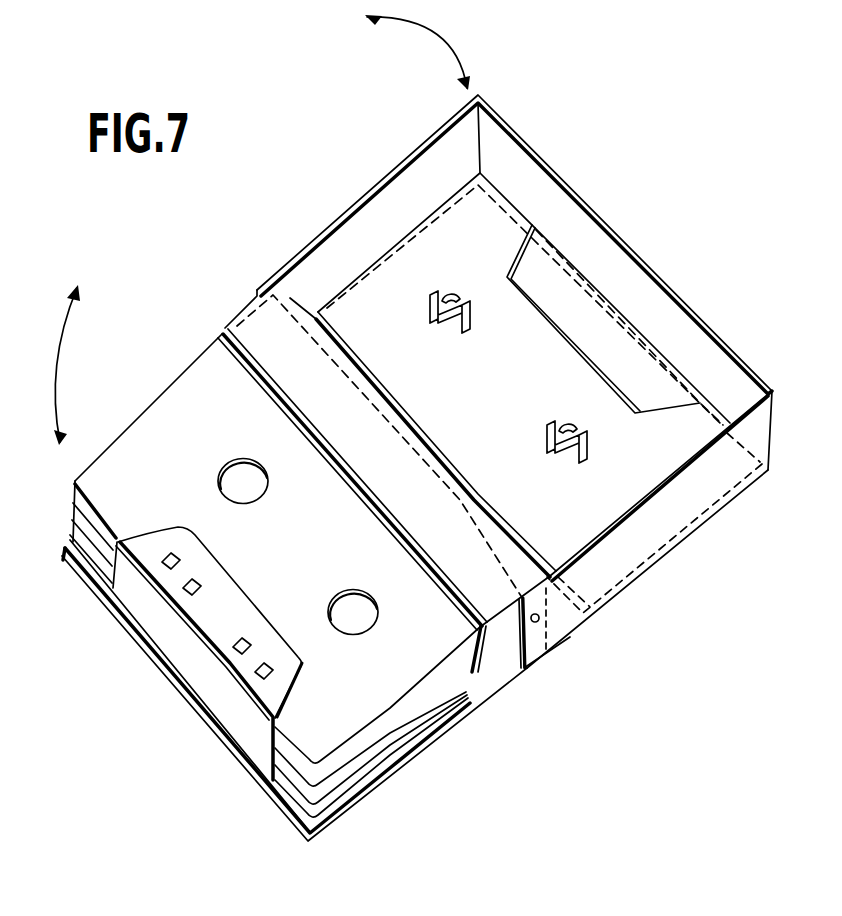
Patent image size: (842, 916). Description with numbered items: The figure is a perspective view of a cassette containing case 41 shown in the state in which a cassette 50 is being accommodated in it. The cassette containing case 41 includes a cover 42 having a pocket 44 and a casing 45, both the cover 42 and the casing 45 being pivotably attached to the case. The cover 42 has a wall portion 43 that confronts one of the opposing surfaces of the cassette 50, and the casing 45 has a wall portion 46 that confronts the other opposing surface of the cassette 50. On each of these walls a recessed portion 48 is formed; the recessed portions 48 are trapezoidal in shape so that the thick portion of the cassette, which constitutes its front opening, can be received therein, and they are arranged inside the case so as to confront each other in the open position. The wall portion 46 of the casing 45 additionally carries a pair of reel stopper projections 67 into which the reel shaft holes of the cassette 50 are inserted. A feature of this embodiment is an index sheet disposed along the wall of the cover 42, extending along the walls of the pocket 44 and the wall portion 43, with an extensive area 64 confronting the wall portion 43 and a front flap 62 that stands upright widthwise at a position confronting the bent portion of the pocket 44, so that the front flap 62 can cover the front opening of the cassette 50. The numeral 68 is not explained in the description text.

The cassette containing case 41 is at (767, 323).
The cover 42 is at (488, 698).
The wall portion 43 is at (307, 833).
The pocket 44 is at (253, 328).
The casing 45 is at (660, 558).
The wall portion 46 is at (487, 212).
The recessed portion 48 is at (585, 312).
The cassette 50 is at (175, 427).
The front flap 62 is at (197, 670).
The extensive area 64 is at (403, 738).
The reel stopper projections 67 is at (467, 310).
The holes 68 is at (256, 491).